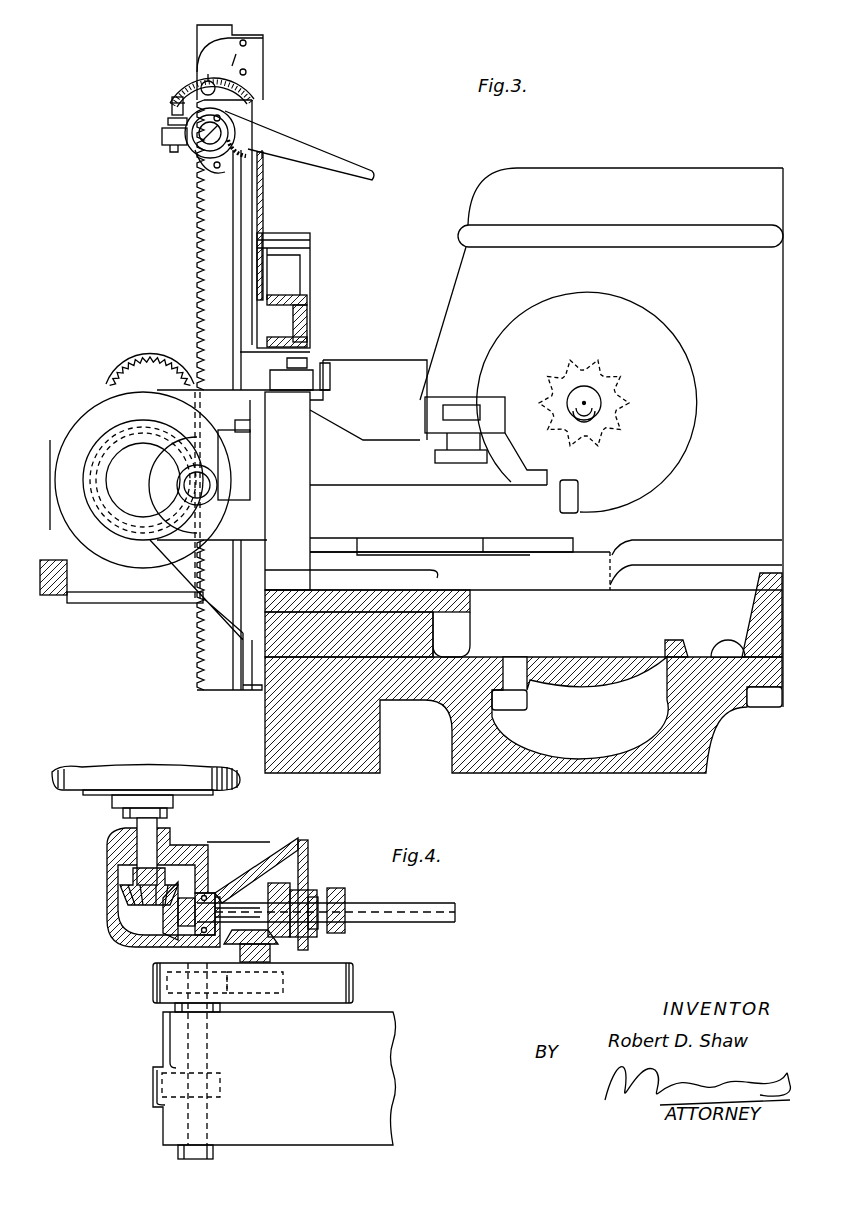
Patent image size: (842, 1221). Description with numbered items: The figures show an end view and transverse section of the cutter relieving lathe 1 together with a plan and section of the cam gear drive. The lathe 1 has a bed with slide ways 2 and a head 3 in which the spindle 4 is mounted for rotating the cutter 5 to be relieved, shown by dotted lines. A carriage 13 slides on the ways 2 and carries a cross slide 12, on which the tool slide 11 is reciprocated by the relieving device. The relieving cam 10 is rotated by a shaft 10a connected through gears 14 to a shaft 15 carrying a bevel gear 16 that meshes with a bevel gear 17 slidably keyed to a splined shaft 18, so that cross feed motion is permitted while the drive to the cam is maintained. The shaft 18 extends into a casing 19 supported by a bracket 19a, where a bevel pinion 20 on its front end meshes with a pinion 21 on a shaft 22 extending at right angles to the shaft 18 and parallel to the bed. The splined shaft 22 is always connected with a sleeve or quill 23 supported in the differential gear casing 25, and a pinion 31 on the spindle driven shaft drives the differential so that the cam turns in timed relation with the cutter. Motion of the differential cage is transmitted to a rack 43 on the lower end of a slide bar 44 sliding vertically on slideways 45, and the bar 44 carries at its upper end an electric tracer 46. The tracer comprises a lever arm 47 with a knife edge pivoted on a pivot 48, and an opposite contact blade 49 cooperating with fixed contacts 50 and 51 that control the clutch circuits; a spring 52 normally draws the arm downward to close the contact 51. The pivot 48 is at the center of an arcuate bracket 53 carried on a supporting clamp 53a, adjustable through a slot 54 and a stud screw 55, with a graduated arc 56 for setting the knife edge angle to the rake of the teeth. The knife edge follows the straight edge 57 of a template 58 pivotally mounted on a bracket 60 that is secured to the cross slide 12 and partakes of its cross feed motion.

In FIG. 3, the lathe 1 is at (706, 772).
In FIG. 3, the slide ways 2 is at (480, 657).
In FIG. 3, the head 3 is at (601, 437).
In FIG. 3, the spindle 4 is at (690, 452).
In FIG. 3, the cutter 5 is at (630, 392).
In FIG. 4, the relieving cam 10 is at (222, 1075).
In FIG. 3, the shaft 10a is at (204, 500).
In FIG. 4, the shaft 10a is at (186, 1038).
In FIG. 3, the tool slide 11 is at (372, 468).
In FIG. 3, the cross slide 12 is at (592, 556).
In FIG. 3, the carriage 13 is at (472, 608).
In FIG. 4, the gears 14 is at (215, 1005).
In FIG. 4, the shaft 15 is at (265, 972).
In FIG. 4, the bevel gear 16 is at (278, 942).
In FIG. 4, the bevel gear 17 is at (270, 896).
In FIG. 4, the splined shaft 18 is at (408, 923).
In FIG. 3, the casing 19 is at (133, 510).
In FIG. 4, the casing 19 is at (108, 915).
In FIG. 3, the bracket 19a is at (196, 615).
In FIG. 4, the bracket 19a is at (207, 852).
In FIG. 4, the bevel pinion 20 is at (165, 920).
In FIG. 4, the bevel pinion 21 is at (125, 895).
In FIG. 4, the shaft 22 is at (158, 832).
In FIG. 4, the sleeve or quill 23 is at (123, 814).
In FIG. 3, the differential gear casing 25 is at (95, 415).
In FIG. 4, the differential gear casing 25 is at (126, 776).
In FIG. 3, the pinion 31 is at (128, 372).
In FIG. 3, the rack 43 is at (197, 278).
In FIG. 3, the slide bar 44 is at (232, 248).
In FIG. 3, the slideways 45 is at (252, 690).
In FIG. 3, the electric tracer 46 is at (267, 121).
In FIG. 3, the lever arm 47 is at (320, 160).
In FIG. 3, the pivot 48 is at (195, 142).
In FIG. 3, the contact blade 49 is at (166, 122).
In FIG. 3, the fixed contact 50 is at (162, 133).
In FIG. 3, the fixed contact 51 is at (172, 105).
In FIG. 3, the spring 52 is at (228, 160).
In FIG. 3, the arcuate bracket 53 is at (266, 105).
In FIG. 3, the supporting clamp 53a is at (263, 42).
In FIG. 3, the slot 54 is at (242, 90).
In FIG. 3, the stud screw 55 is at (204, 82).
In FIG. 3, the graduated arc 56 is at (231, 57).
In FIG. 3, the straight edge 57 is at (264, 157).
In FIG. 3, the template 58 is at (264, 203).
In FIG. 3, the bracket 60 is at (312, 275).